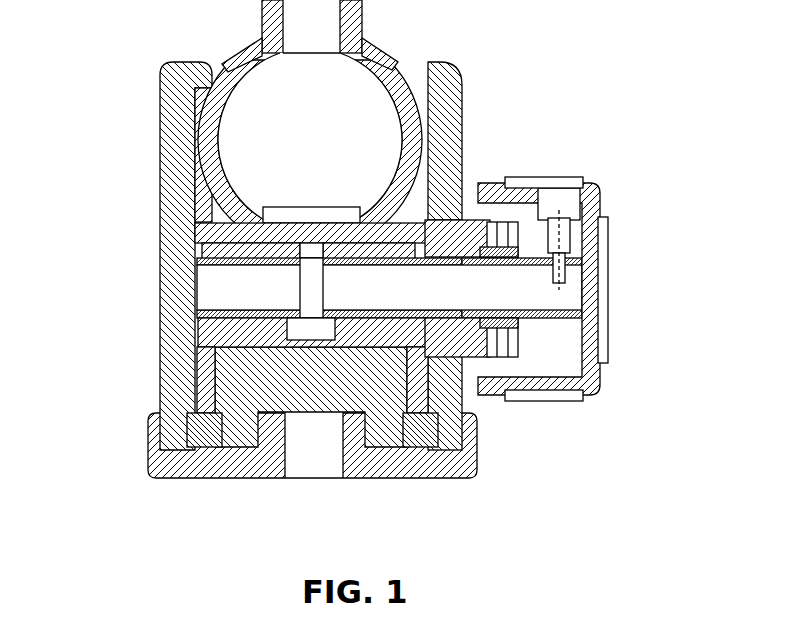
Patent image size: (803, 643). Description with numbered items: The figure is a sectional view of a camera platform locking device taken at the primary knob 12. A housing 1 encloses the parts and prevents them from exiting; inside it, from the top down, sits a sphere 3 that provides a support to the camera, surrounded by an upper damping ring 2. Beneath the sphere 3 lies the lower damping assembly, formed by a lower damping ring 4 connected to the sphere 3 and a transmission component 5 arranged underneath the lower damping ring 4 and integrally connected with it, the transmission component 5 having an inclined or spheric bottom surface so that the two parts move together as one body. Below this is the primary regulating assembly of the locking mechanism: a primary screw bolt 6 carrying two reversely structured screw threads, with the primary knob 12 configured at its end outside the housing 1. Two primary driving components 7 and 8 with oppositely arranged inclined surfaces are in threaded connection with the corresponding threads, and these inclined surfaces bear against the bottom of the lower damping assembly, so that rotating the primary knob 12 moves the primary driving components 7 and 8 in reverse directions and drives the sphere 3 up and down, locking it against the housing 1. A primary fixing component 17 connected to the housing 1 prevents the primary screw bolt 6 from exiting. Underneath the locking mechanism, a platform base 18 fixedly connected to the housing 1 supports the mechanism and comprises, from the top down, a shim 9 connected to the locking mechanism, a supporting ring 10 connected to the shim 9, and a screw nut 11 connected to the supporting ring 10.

The housing 1 is at (212, 82).
The upper damping ring 2 is at (197, 88).
The sphere 3 is at (212, 142).
The lower damping ring 4 is at (215, 203).
The transmission component 5 is at (200, 228).
The primary screw bolt 6 is at (222, 290).
The primary driving component 7 is at (222, 332).
The primary driving component 8 is at (467, 185).
The shim 9 is at (225, 338).
The supporting ring 10 is at (203, 368).
The screw nut 11 is at (200, 433).
The primary knob 12 is at (595, 200).
The primary fixing component 17 is at (483, 222).
The platform base 18 is at (437, 487).